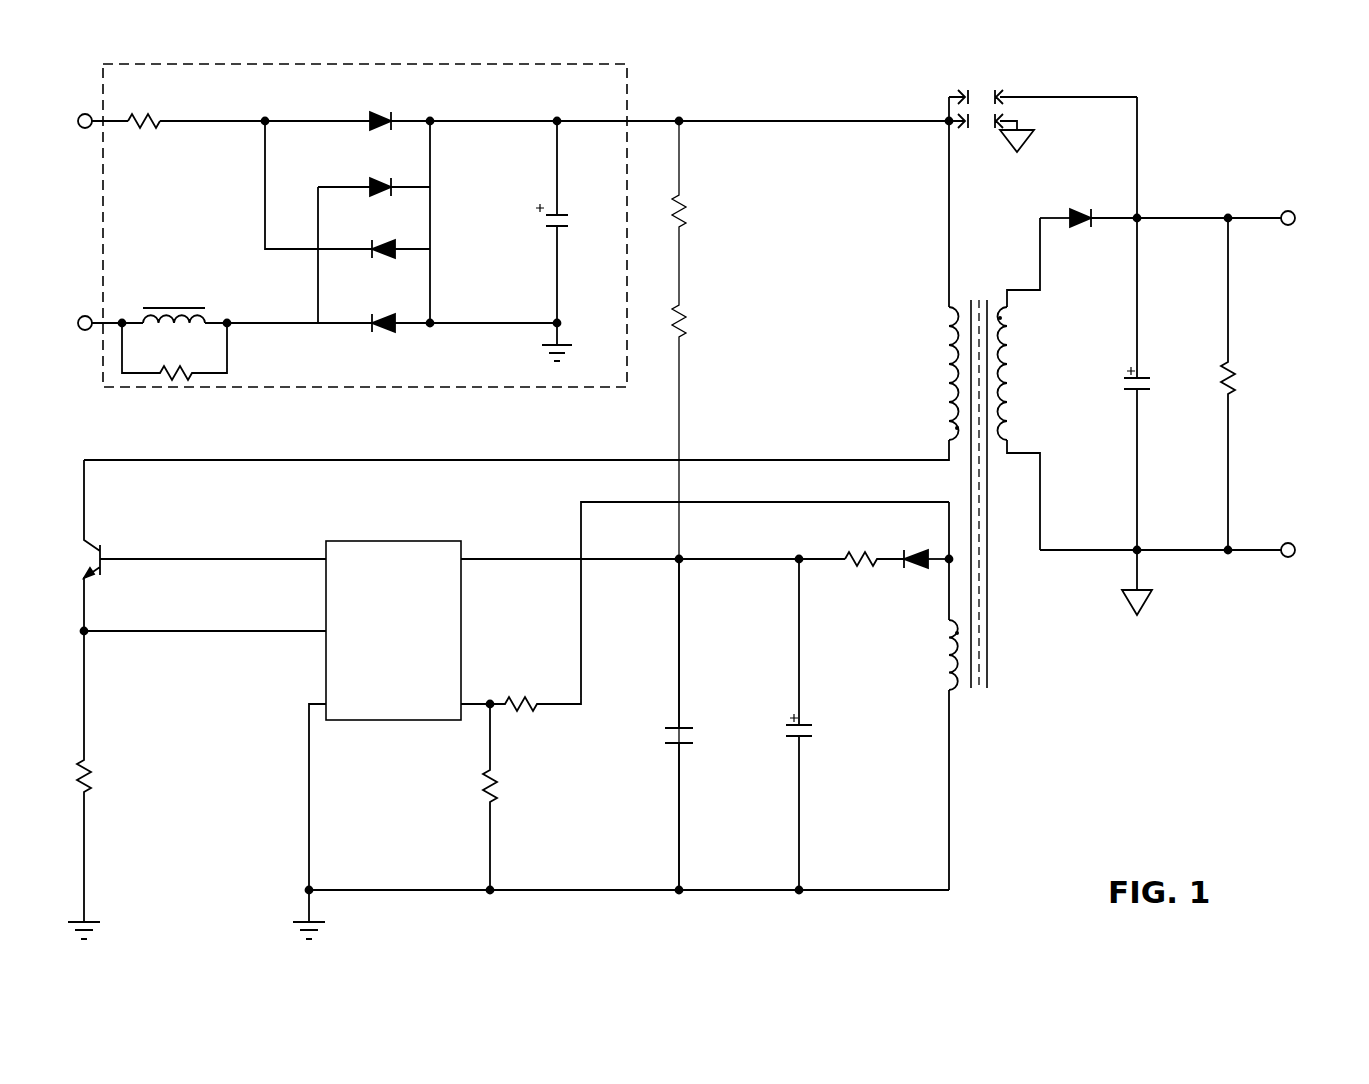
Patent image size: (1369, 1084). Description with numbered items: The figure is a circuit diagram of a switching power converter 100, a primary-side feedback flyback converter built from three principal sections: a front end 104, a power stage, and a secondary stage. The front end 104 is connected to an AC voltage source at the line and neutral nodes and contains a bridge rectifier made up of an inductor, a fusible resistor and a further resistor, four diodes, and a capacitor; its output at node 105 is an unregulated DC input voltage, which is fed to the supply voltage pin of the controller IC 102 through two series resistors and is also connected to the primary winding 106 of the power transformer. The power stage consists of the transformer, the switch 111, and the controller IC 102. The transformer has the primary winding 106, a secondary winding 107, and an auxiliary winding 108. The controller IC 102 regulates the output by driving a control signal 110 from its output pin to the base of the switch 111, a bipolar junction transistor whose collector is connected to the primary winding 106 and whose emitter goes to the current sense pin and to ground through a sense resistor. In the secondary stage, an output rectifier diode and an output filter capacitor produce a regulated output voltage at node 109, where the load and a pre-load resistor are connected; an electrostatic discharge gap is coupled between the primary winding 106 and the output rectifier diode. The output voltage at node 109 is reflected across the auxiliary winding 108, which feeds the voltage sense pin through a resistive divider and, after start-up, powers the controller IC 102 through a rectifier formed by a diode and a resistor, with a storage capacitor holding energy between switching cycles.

The switching power converter 100 is at (694, 496).
The controller IC 102 is at (352, 540).
The front end 104 is at (627, 88).
The node 105 is at (681, 123).
The primary winding 106 is at (950, 320).
The secondary winding 107 is at (1003, 340).
The auxiliary winding 108 is at (950, 652).
The node 109 is at (1228, 215).
The control signal 110 is at (188, 556).
The switch 111 is at (100, 572).